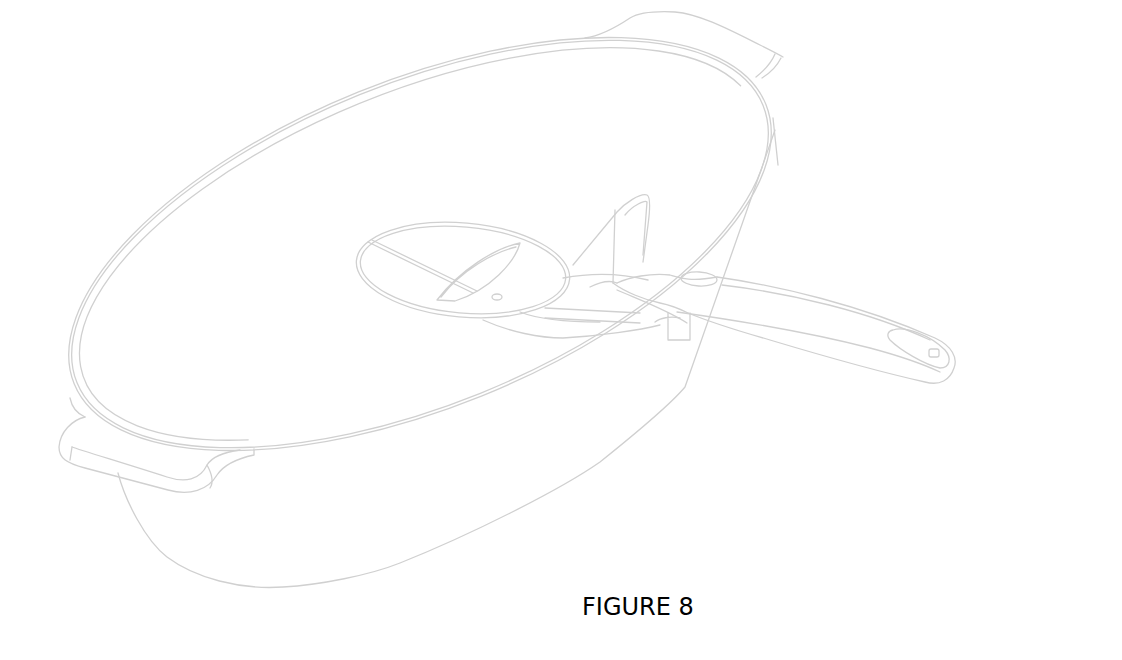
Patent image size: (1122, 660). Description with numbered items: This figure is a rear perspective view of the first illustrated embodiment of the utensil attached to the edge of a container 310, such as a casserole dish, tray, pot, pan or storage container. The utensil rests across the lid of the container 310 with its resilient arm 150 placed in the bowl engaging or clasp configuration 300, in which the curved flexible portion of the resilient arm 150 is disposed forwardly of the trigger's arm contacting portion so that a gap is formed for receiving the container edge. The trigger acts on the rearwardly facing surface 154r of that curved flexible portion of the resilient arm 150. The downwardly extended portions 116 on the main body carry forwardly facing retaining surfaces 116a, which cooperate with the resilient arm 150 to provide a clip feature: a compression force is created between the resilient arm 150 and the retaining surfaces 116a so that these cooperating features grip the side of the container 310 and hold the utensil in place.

The bowl engaging configuration 300 is at (764, 281).
The container 310 is at (762, 53).
The resilient arm 150 is at (757, 338).
The rearwardly facing surface 154r is at (699, 279).
The downwardly extended portions 116 is at (660, 330).
The forwardly facing retaining surfaces 116a is at (648, 327).